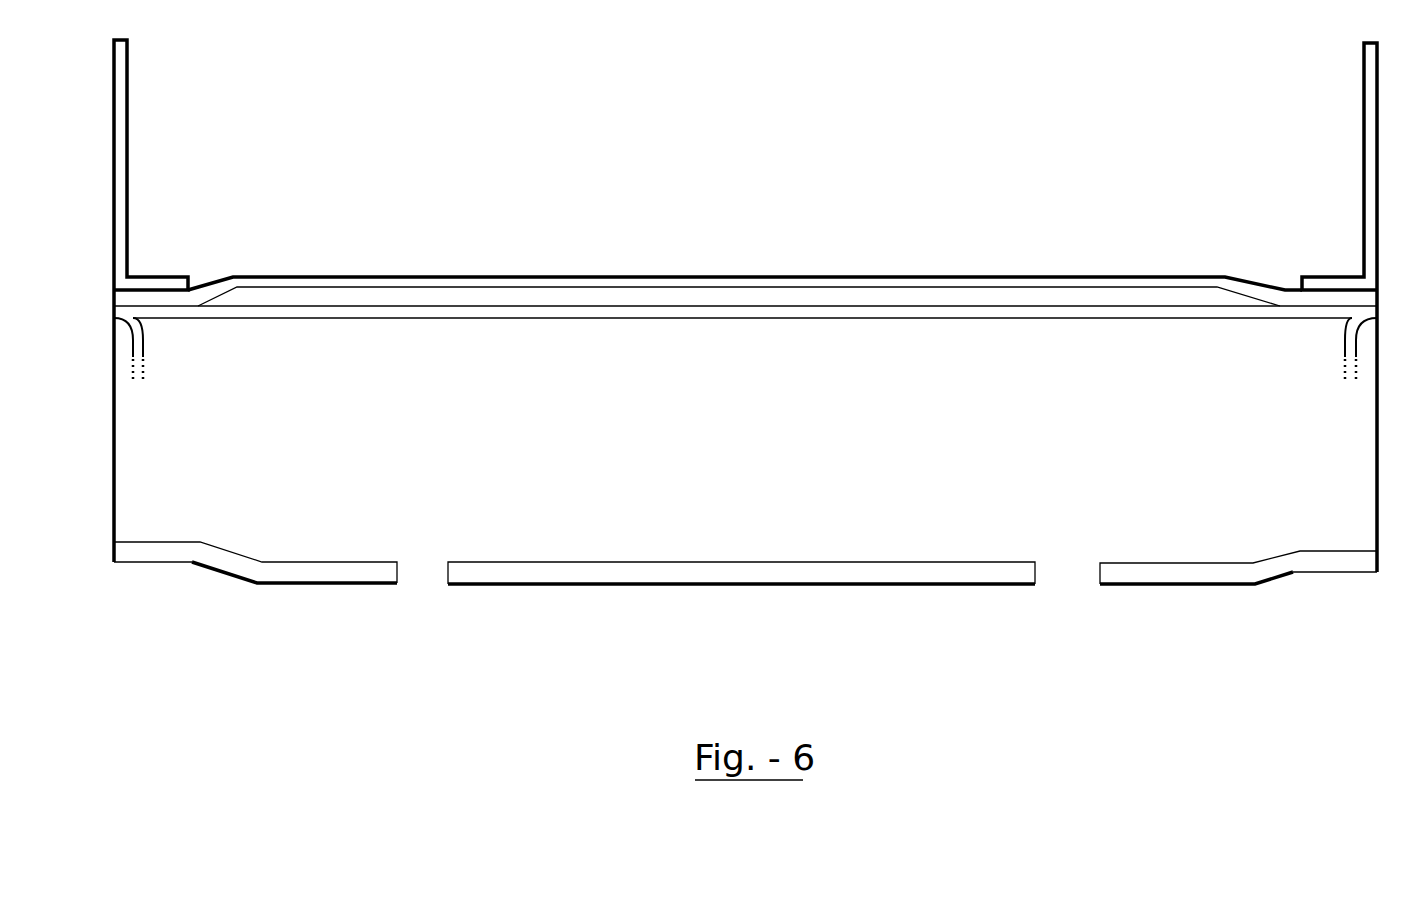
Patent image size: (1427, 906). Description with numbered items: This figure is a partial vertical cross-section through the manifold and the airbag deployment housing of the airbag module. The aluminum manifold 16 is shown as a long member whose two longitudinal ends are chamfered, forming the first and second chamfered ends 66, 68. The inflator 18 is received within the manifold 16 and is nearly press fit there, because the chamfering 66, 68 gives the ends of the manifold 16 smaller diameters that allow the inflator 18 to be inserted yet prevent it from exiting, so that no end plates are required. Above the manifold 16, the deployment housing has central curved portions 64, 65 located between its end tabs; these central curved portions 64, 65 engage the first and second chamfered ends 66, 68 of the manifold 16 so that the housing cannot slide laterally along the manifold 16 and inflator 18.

The manifold 16 is at (770, 588).
The inflator 18 is at (858, 310).
The central curved portion 64 is at (162, 288).
The central curved portion 65 is at (1340, 286).
The first chamfered end 66 is at (155, 298).
The second chamfered end 68 is at (1340, 303).